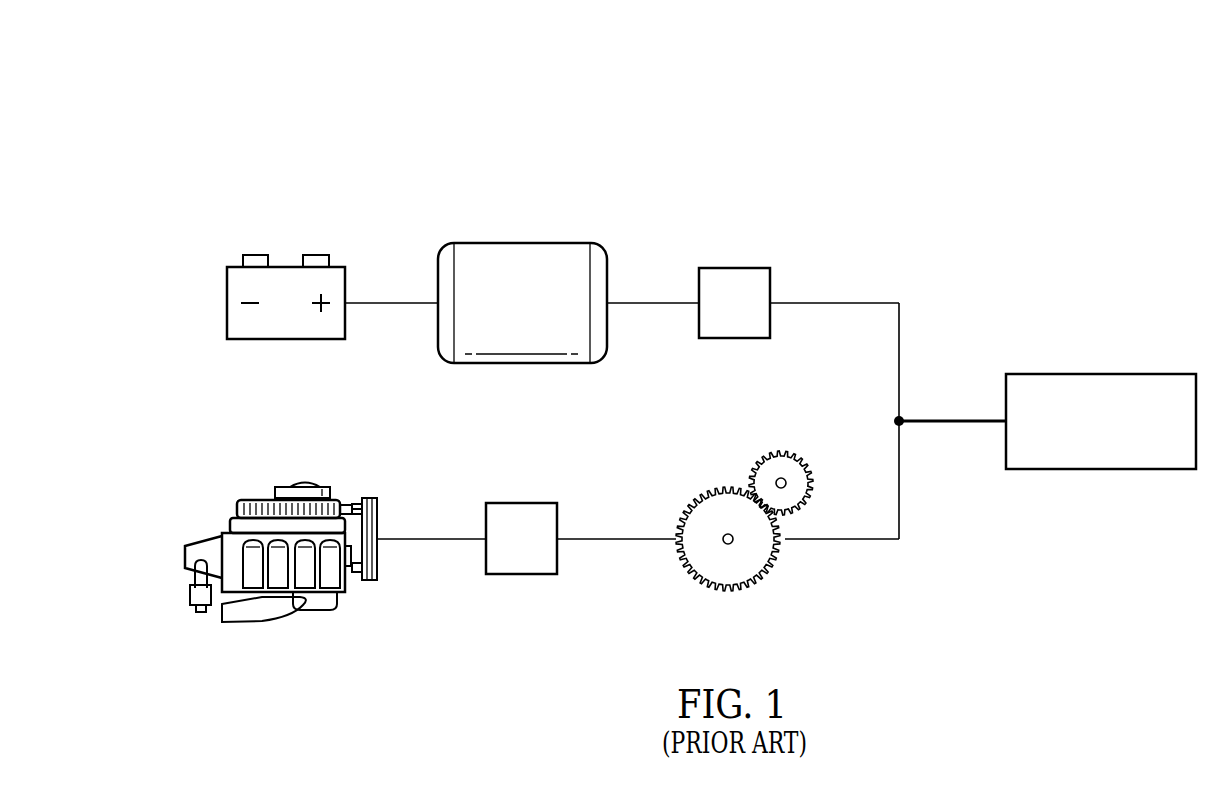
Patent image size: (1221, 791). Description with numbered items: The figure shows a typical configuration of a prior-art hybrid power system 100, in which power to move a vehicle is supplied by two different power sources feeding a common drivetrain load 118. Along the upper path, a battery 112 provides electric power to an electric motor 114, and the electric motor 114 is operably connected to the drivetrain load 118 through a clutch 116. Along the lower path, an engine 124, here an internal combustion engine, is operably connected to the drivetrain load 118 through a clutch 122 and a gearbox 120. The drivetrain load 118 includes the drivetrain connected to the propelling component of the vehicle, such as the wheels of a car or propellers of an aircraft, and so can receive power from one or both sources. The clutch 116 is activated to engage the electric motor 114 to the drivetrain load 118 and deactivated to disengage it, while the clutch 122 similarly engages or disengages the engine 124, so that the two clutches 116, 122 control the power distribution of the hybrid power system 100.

The hybrid power system 100 is at (585, 106).
The battery 112 is at (227, 297).
The electric motor 114 is at (522, 243).
The clutch 116 is at (735, 268).
The drivetrain load 118 is at (1100, 374).
The gearbox 120 is at (732, 590).
The clutch 122 is at (522, 574).
The engine 124 is at (185, 558).